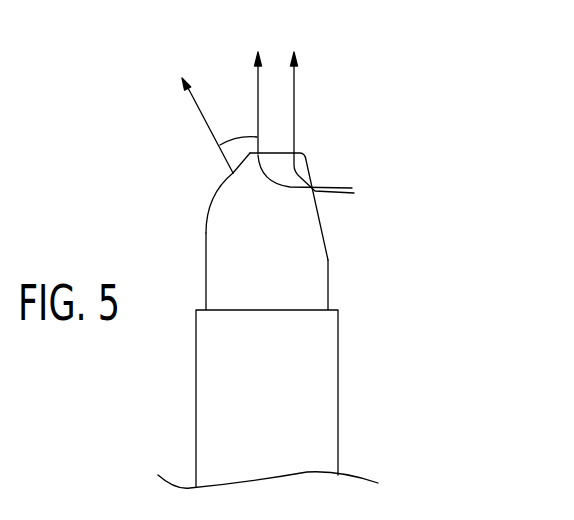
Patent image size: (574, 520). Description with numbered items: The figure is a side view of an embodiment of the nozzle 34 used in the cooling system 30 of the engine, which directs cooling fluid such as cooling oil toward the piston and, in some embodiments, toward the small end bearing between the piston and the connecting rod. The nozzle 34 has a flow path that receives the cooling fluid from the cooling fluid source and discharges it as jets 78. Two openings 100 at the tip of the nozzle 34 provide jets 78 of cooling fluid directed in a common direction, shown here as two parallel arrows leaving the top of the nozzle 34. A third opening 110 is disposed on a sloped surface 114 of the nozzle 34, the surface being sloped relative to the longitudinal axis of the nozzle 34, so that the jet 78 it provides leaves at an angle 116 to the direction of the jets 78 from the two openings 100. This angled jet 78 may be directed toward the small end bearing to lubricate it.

The cooling system 30 is at (366, 46).
The nozzle 34 is at (399, 237).
The jet 78 is at (198, 110).
The openings 100 is at (322, 180).
The third opening 110 is at (233, 174).
The sloped surface 114 is at (232, 180).
The angle 116 is at (242, 149).